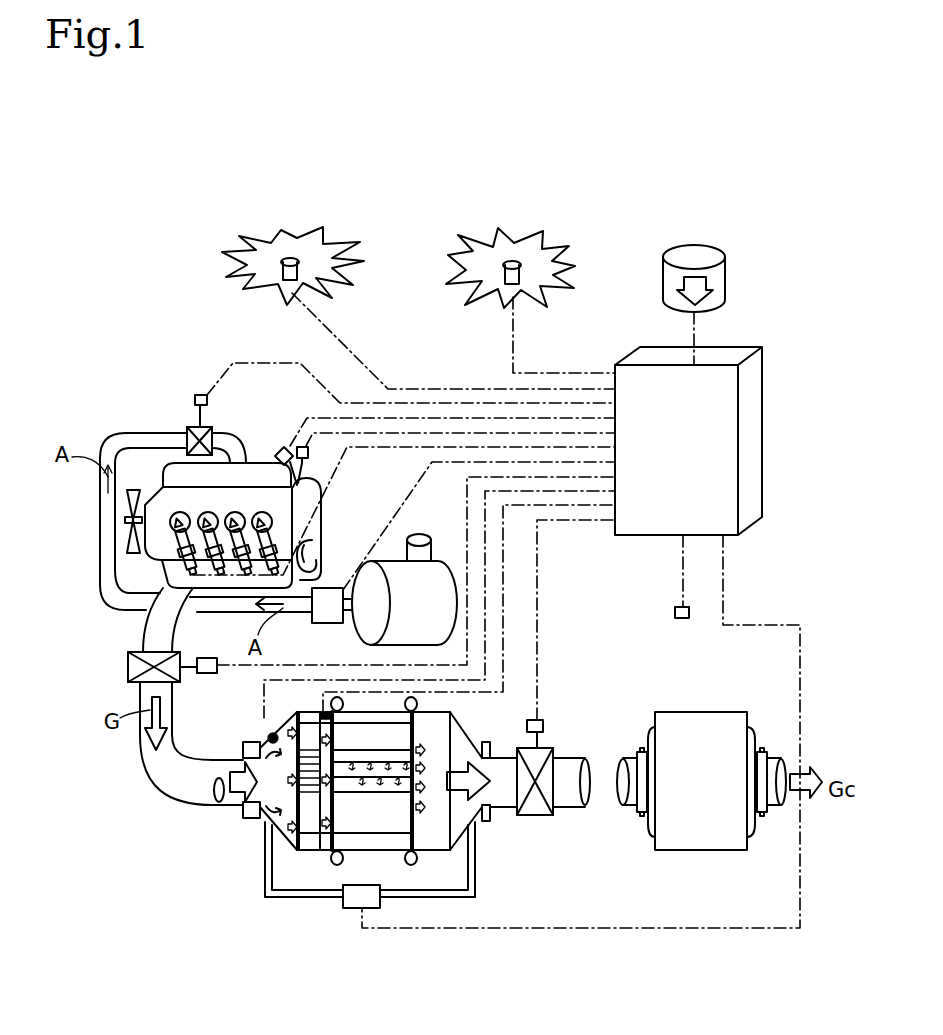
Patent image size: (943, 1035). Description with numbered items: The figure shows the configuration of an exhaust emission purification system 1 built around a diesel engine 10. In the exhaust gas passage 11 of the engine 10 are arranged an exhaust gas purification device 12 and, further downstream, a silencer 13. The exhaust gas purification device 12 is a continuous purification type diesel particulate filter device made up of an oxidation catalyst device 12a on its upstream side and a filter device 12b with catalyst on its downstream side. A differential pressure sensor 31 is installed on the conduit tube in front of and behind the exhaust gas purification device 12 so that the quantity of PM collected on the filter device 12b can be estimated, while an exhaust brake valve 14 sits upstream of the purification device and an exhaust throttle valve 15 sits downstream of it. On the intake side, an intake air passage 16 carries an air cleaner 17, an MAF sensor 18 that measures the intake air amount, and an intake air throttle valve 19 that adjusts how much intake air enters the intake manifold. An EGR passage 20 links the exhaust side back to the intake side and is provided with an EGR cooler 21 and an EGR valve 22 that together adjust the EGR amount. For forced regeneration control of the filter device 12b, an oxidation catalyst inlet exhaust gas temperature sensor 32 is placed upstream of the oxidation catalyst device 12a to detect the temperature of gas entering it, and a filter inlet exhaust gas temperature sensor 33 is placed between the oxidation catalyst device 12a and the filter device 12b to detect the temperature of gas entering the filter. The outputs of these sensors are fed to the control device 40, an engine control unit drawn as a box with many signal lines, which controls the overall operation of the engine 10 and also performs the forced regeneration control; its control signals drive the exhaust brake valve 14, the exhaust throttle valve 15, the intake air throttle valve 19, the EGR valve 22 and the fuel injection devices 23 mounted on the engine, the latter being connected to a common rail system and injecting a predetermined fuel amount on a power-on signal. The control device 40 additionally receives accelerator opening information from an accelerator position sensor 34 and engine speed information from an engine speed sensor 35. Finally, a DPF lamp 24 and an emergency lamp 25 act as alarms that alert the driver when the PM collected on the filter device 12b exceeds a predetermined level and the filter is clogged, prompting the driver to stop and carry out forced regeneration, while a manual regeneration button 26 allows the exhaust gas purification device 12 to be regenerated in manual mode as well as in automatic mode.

The exhaust emission purification system 1 is at (637, 255).
The diesel engine 10 is at (153, 487).
The exhaust gas passage 11 is at (163, 792).
The exhaust gas purification device 12 is at (442, 848).
The oxidation catalyst device 12a is at (312, 822).
The filter device with catalyst 12b is at (382, 820).
The silencer 13 is at (707, 827).
The exhaust brake valve 14 is at (128, 665).
The exhaust throttle valve 15 is at (553, 750).
The intake air passage 16 is at (100, 507).
The air cleaner 17 is at (432, 607).
The MAF sensor 18 is at (330, 588).
The intake air throttle valve 19 is at (197, 424).
The EGR passage 20 is at (323, 474).
The EGR cooler 21 is at (323, 508).
The EGR valve 22 is at (277, 450).
The fuel injection devices 23 is at (178, 547).
The DPF lamp 24 is at (288, 255).
The emergency lamp 25 is at (512, 260).
The manual regeneration button 26 is at (713, 258).
The differential pressure sensor 31 is at (353, 897).
The oxidation catalyst inlet exhaust gas temperature sensor 32 is at (270, 735).
The filter inlet exhaust gas temperature sensor 33 is at (325, 712).
The accelerator position sensor 34 is at (683, 620).
The engine speed sensor 35 is at (294, 443).
The control device 40 is at (752, 447).